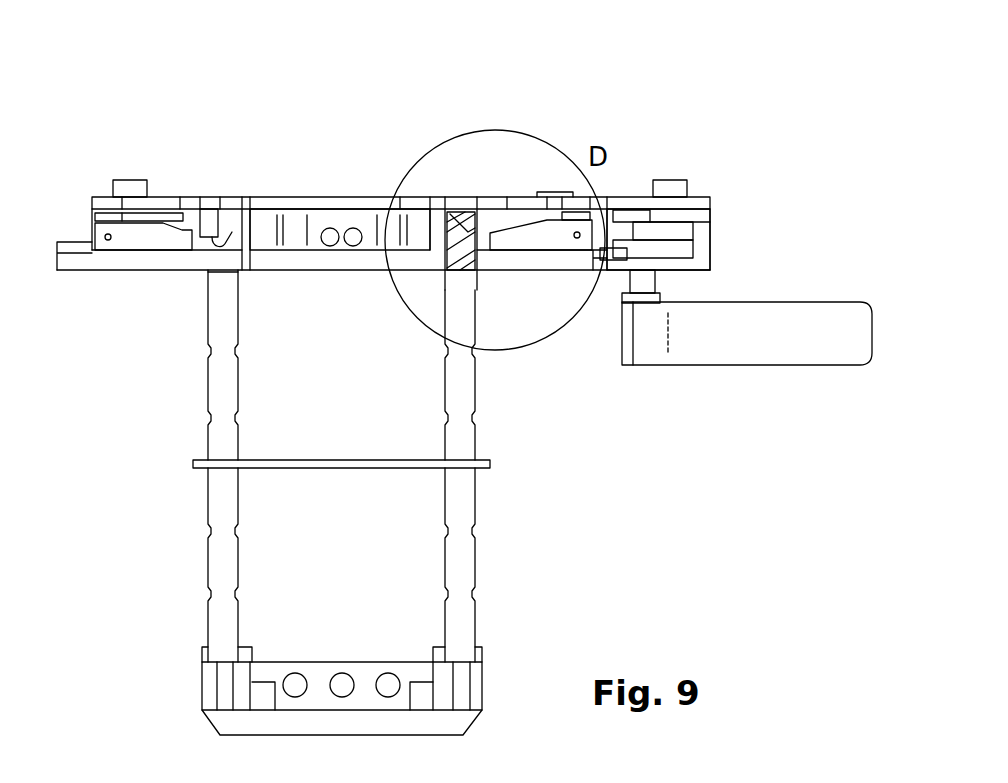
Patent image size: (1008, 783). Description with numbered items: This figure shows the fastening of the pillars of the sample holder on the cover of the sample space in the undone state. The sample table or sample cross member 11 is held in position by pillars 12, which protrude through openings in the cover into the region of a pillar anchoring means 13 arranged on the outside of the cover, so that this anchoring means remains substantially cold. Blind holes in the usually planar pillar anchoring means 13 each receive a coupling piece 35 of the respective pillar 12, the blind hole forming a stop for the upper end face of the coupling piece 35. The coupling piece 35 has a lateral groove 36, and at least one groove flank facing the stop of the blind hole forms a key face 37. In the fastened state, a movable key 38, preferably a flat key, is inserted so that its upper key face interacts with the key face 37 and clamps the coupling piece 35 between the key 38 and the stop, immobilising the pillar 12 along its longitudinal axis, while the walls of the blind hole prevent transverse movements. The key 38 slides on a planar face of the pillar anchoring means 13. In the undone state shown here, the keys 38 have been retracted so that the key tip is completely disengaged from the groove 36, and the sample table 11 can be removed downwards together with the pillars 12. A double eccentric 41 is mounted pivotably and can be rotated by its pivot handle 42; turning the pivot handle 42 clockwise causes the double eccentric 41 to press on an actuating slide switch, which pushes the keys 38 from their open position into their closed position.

The sample cross member 11 is at (362, 690).
The pillar 12 is at (207, 533).
The pillar anchoring means 13 is at (353, 103).
The coupling piece 35 is at (237, 272).
The groove 36 is at (232, 228).
The key face 37 is at (210, 235).
The key 38 is at (132, 243).
The double eccentric 41 is at (658, 235).
The pivot handle 42 is at (740, 352).